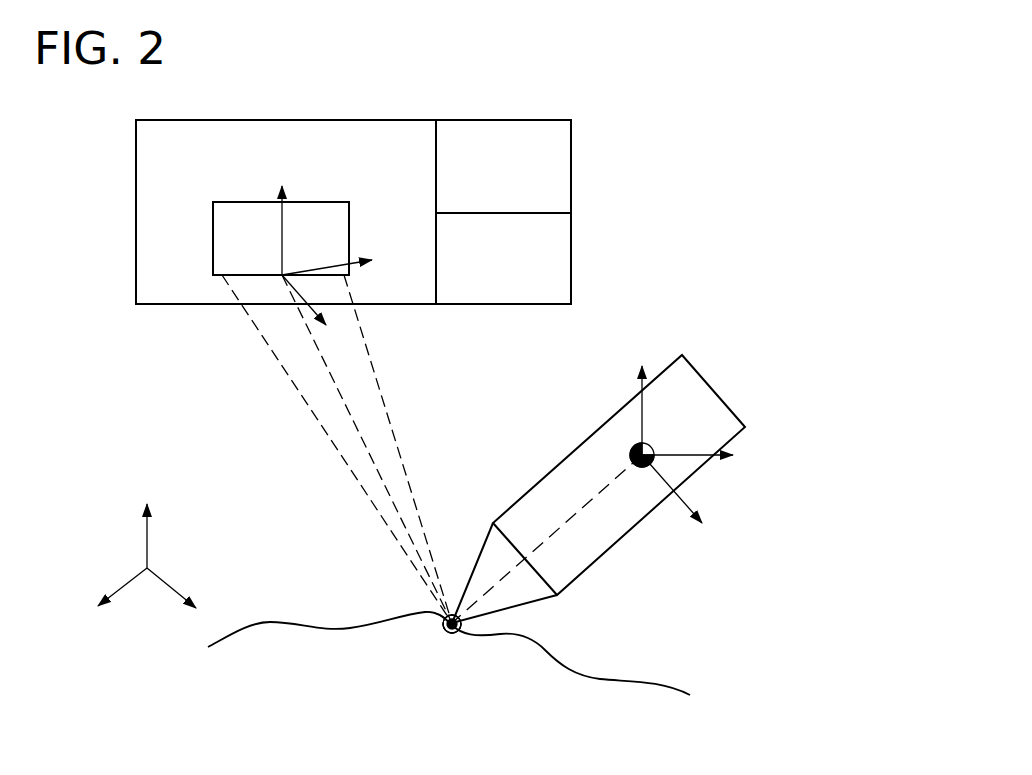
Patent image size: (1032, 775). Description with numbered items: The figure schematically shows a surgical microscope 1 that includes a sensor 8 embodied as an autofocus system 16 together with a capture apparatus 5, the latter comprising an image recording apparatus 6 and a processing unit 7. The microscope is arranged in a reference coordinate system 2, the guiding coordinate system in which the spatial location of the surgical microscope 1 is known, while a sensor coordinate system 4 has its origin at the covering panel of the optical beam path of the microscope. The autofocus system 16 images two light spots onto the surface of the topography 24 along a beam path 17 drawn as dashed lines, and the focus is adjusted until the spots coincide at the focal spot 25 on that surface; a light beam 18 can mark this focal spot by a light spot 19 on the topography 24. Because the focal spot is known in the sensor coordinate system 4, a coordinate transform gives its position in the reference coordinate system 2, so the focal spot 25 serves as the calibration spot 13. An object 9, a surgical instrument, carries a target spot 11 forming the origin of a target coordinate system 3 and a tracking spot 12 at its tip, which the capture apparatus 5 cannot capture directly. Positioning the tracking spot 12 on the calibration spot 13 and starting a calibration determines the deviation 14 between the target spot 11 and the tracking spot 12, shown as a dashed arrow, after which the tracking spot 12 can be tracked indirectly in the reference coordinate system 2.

The surgical microscope 1 is at (122, 176).
The reference coordinate system 2 is at (124, 546).
The target coordinate system 3 is at (704, 444).
The sensor coordinate system 4 is at (300, 222).
The capture apparatus 5 is at (534, 104).
The image recording apparatus 6 is at (539, 252).
The processing unit 7 is at (531, 164).
The sensor 8 is at (237, 244).
The object 9 is at (685, 466).
The target spot 11 is at (644, 468).
The tracking spot 12 is at (456, 634).
The calibration spot 13 is at (442, 632).
The deviation 14 is at (580, 514).
The autofocus system 16 is at (281, 238).
The beam path 17 is at (376, 384).
The light beam 18 is at (314, 390).
The light spot 19 is at (442, 616).
The topography 24 is at (262, 623).
The focal spot 25 is at (444, 627).